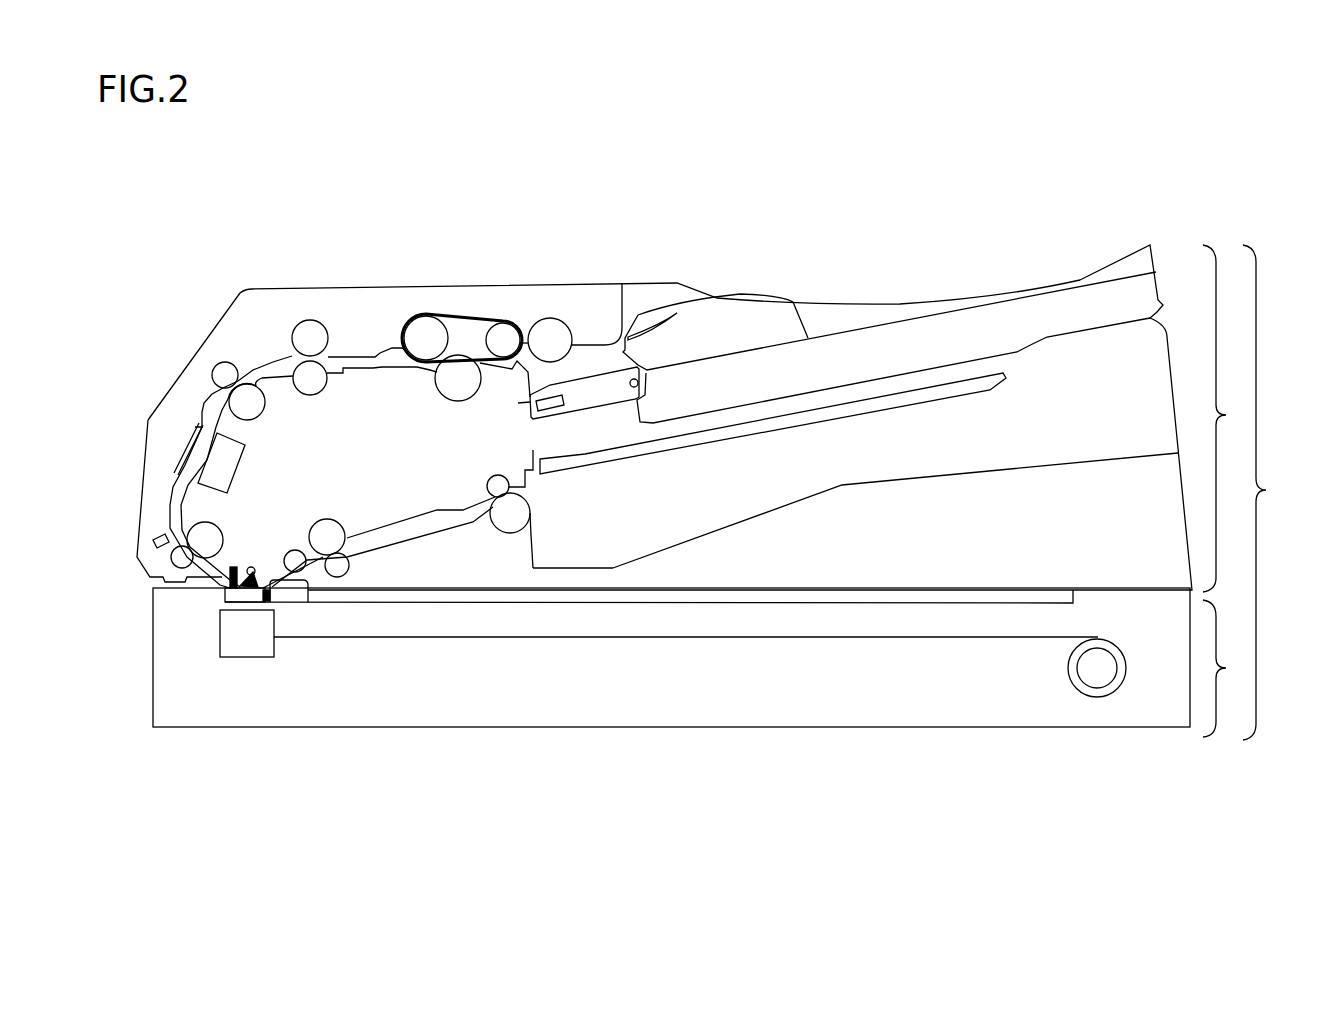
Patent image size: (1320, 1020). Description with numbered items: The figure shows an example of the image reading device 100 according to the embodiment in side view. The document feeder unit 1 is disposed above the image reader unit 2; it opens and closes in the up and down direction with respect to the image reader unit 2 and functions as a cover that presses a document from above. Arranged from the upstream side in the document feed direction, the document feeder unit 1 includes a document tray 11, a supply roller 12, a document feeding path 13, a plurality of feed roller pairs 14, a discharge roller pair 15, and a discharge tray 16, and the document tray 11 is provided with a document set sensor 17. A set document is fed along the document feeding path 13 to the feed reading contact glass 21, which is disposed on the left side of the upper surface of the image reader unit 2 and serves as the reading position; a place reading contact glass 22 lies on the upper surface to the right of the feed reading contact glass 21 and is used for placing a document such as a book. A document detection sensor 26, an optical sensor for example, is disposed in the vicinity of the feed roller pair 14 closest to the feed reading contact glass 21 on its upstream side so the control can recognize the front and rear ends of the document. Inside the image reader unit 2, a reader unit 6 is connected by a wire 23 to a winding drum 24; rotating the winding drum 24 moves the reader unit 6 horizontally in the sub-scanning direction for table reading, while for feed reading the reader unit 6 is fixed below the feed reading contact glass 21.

The image reading device 100 is at (1277, 492).
The document feeder unit 1 is at (688, 418).
The image reader unit 2 is at (696, 662).
The reader unit 6 is at (238, 640).
The document tray 11 is at (830, 343).
The supply roller 12 is at (553, 333).
The document feeding path 13 is at (337, 361).
The feed roller pairs 14 is at (308, 333).
The discharge roller pair 15 is at (515, 511).
The discharge tray 16 is at (714, 524).
The document set sensor 17 is at (542, 410).
The feed reading contact glass 21 is at (240, 598).
The place reading contact glass 22 is at (943, 598).
The wire 23 is at (960, 640).
The winding drum 24 is at (1100, 699).
The document detection sensor 26 is at (153, 542).